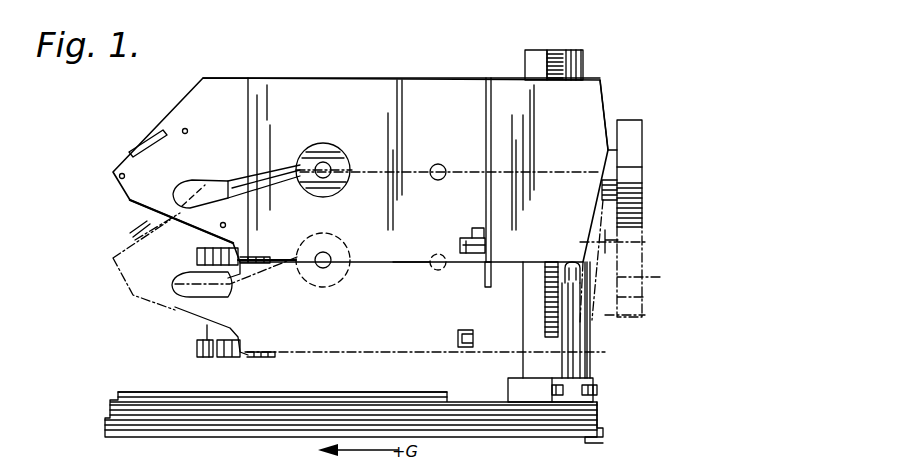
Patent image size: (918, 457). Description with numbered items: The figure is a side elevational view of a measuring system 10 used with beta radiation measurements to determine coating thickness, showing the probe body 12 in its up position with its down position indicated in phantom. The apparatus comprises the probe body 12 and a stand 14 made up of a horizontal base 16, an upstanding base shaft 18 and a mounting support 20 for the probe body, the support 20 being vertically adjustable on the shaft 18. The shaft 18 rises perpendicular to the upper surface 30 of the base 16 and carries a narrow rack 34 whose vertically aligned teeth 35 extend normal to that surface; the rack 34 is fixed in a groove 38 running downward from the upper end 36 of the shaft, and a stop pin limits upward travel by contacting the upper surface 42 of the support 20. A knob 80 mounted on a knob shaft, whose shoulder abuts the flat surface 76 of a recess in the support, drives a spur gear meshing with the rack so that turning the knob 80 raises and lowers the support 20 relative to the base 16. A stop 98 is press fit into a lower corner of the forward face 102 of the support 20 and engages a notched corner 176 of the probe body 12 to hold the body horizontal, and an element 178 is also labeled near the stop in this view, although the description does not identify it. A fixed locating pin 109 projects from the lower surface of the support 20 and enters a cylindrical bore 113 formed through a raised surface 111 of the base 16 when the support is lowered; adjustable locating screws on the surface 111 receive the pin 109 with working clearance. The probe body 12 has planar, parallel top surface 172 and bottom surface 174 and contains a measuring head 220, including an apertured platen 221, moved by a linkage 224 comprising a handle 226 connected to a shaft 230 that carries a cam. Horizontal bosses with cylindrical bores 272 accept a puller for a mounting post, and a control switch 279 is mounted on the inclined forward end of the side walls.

The measuring system 10 is at (673, 99).
The probe body 12 is at (319, 74).
The stand 14 is at (584, 377).
The horizontal base 16 is at (108, 408).
The base shaft 18 is at (582, 325).
The mounting support 20 is at (600, 83).
The upper surface 30 is at (128, 392).
The rack 34 is at (545, 329).
The teeth 35 is at (545, 300).
The upper end 36 is at (538, 50).
The groove 38 is at (580, 337).
The upper surface 42 is at (504, 78).
The flat surface 76 is at (521, 262).
The knob 80 is at (643, 132).
The stop 98 is at (472, 230).
The forward face 102 is at (487, 277).
The locating pin 109 is at (580, 278).
The raised surface 111 is at (520, 380).
The cylindrical bore 113 is at (549, 392).
The top surface 172 is at (418, 78).
The bottom surface 174 is at (411, 266).
The notched corner 176 is at (458, 266).
The guide bracket 178 is at (462, 240).
The measuring head 220 is at (210, 240).
The apertured platen 221 is at (240, 285).
The linkage 224 is at (245, 171).
The handle 226 is at (239, 180).
The shaft 230 is at (323, 160).
The cylindrical bores 272 is at (440, 164).
The control switch 279 is at (132, 143).